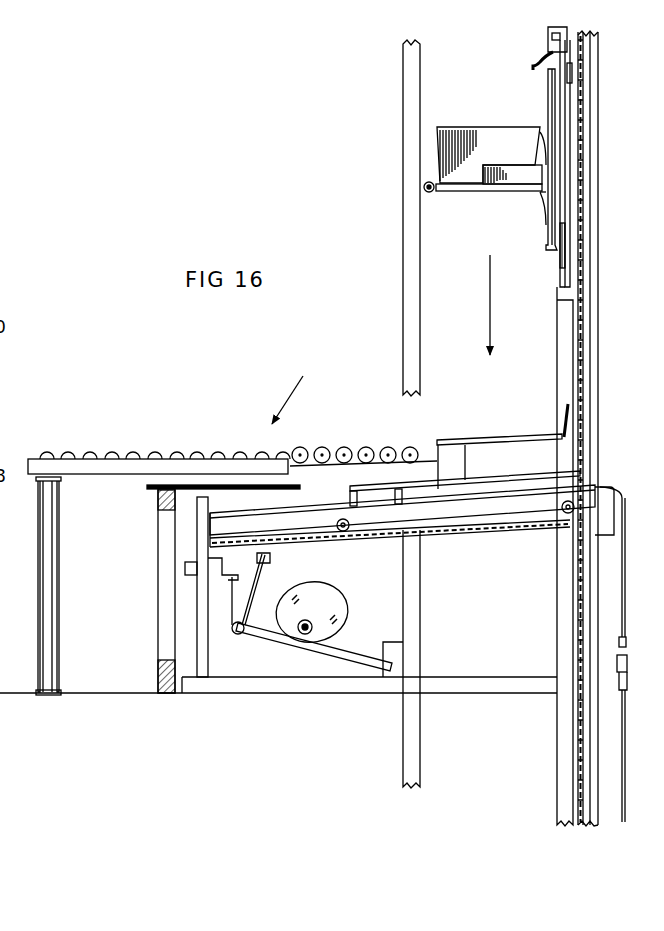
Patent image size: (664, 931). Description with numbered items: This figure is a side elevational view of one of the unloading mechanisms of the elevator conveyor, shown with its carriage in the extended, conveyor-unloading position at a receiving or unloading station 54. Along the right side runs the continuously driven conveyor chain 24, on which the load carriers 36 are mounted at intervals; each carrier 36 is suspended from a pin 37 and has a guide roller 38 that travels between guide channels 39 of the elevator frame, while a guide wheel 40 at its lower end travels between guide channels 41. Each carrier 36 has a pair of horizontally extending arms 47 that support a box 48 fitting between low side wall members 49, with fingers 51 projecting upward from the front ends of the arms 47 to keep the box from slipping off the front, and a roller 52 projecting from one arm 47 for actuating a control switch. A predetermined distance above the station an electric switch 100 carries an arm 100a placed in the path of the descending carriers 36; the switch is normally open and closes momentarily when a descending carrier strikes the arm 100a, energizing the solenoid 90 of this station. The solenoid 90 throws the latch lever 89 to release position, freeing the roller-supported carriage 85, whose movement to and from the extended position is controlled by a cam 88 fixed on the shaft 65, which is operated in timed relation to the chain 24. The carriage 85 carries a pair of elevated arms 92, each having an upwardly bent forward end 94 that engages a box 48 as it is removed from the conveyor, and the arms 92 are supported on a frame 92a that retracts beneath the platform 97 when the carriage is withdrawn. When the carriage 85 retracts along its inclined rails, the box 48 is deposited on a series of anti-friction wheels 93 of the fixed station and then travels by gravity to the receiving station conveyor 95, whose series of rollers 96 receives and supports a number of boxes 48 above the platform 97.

The conveyor chain 24 is at (580, 150).
The load carrier 36 is at (538, 203).
The pin 37 is at (548, 77).
The guide roller 38 is at (580, 72).
The guide channels 39 is at (574, 198).
The guide wheel 40 is at (585, 243).
The guide channels 41 is at (560, 270).
The horizontally extending arms 47 is at (462, 192).
The box 48 is at (495, 143).
The low side wall members 49 is at (500, 175).
The fingers 51 is at (424, 185).
The roller 52 is at (424, 190).
The receiving or unloading station 54 is at (292, 390).
The shaft 65 is at (305, 633).
The carriage 85 is at (538, 508).
The cam 88 is at (320, 612).
The latch lever 89 is at (248, 545).
The solenoid 90 is at (190, 575).
The elevated arms 92 is at (486, 437).
The supporting frame 92a is at (352, 488).
The anti-friction wheels 93 is at (362, 448).
The upwardly bent forward end 94 is at (563, 420).
The receiving station conveyor 95 is at (98, 462).
The rollers 96 is at (178, 456).
The platform 97 is at (158, 486).
The electric switch 100 is at (545, 40).
The arm 100a is at (533, 62).